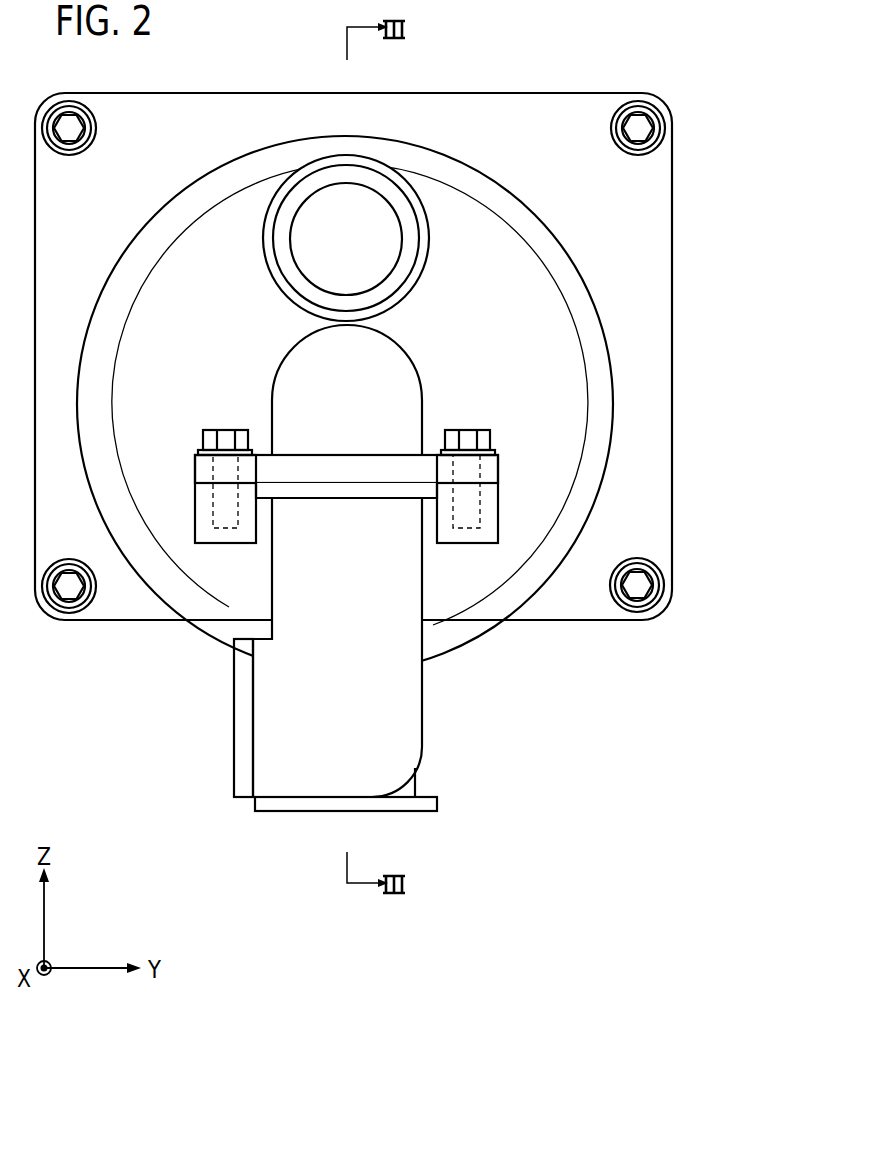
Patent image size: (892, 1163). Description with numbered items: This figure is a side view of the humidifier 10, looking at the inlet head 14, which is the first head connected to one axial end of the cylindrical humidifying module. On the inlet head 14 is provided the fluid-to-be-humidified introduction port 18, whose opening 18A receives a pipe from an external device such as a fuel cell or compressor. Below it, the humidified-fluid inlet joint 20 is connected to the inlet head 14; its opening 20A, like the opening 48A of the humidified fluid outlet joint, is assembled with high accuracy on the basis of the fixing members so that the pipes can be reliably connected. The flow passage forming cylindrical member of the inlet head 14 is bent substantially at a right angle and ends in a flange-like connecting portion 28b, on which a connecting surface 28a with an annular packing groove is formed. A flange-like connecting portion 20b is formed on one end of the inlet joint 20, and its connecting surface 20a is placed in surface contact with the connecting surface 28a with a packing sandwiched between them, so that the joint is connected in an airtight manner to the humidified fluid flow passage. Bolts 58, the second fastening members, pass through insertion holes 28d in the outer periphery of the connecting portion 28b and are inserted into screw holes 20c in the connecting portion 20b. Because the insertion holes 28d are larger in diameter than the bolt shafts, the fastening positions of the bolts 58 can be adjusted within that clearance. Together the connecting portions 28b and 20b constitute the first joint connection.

The humidifier 10 is at (638, 48).
The inlet head 14 is at (662, 194).
The fluid-to-be-humidified introduction port 18 is at (419, 275).
The opening 18A is at (293, 251).
The humidified-fluid inlet joint 20 is at (397, 743).
The opening 20A is at (233, 790).
The connecting surface 20a is at (360, 480).
The connecting portion 20b is at (373, 490).
The screw holes 20c is at (235, 512).
The connecting surface 28a is at (310, 485).
The connecting portion 28b is at (308, 470).
The insertion holes 28d is at (235, 473).
The opening 48A is at (294, 802).
The bolts 58 is at (208, 428).